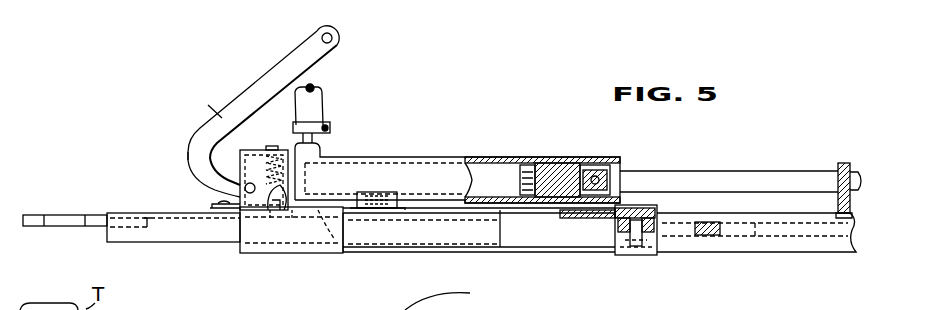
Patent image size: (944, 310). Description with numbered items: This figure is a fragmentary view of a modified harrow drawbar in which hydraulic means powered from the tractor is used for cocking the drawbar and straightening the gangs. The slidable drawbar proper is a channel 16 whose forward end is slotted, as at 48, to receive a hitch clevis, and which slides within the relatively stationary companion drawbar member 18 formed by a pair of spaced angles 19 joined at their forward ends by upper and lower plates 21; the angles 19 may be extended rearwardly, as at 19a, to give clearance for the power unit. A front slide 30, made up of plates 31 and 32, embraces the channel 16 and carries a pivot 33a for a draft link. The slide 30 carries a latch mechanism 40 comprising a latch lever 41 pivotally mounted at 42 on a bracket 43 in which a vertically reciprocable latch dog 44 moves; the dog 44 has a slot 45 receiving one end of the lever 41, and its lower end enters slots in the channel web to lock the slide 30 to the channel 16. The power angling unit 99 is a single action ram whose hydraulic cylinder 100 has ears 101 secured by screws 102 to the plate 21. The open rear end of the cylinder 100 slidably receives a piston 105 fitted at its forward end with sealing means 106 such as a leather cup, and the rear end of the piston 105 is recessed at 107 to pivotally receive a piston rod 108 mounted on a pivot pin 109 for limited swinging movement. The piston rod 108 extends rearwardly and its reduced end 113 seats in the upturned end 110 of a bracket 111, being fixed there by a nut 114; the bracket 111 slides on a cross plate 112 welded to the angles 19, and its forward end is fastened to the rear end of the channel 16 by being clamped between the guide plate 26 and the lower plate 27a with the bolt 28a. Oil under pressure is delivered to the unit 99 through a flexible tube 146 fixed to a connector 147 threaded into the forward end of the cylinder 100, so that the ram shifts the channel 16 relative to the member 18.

The drawbar channel 16 is at (190, 247).
The companion drawbar member 18 is at (595, 259).
The angles 19 is at (503, 240).
The rearward extension of angles 19a is at (773, 249).
The upper and lower plates 21 is at (405, 207).
The upper guide plate 26 is at (650, 209).
The lower guide plate 27a is at (657, 246).
The bolt 28a is at (640, 250).
The front slide 30 is at (310, 259).
The slide plate 31 is at (213, 204).
The slide plate 32 is at (275, 253).
The pivot 33a is at (320, 215).
The latch mechanism 40 is at (259, 70).
The latch lever 41 is at (305, 67).
The pivot 42 is at (206, 161).
The bracket 43 is at (203, 104).
The latch dog 44 is at (272, 147).
The slot 45 is at (288, 227).
The slot 48 is at (82, 213).
The power angling unit 99 is at (442, 134).
The hydraulic cylinder 100 is at (488, 158).
The ears 101 is at (321, 185).
The screws 102 is at (388, 191).
The piston 105 is at (568, 163).
The sealing means 106 is at (530, 163).
The recess 107 is at (605, 164).
The piston rod 108 is at (678, 172).
The pivot pin 109 is at (600, 180).
The upturned end 110 is at (843, 163).
The bracket 111 is at (820, 227).
The cross plate 112 is at (710, 237).
The reduced end 113 is at (838, 177).
The nut 114 is at (854, 172).
The flexible tube 146 is at (310, 103).
The connector 147 is at (330, 128).